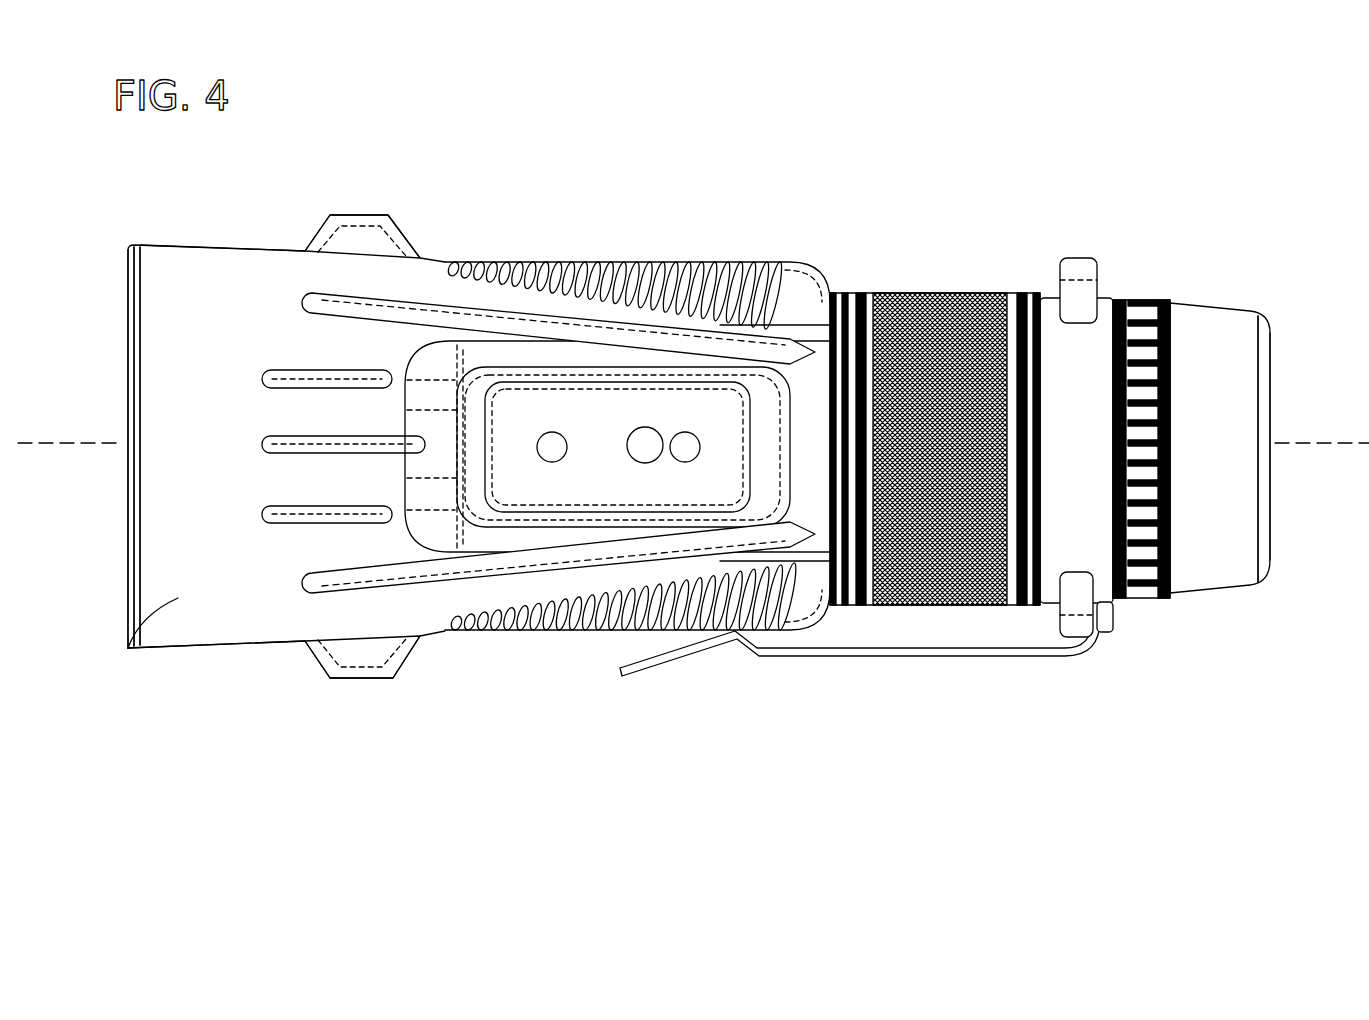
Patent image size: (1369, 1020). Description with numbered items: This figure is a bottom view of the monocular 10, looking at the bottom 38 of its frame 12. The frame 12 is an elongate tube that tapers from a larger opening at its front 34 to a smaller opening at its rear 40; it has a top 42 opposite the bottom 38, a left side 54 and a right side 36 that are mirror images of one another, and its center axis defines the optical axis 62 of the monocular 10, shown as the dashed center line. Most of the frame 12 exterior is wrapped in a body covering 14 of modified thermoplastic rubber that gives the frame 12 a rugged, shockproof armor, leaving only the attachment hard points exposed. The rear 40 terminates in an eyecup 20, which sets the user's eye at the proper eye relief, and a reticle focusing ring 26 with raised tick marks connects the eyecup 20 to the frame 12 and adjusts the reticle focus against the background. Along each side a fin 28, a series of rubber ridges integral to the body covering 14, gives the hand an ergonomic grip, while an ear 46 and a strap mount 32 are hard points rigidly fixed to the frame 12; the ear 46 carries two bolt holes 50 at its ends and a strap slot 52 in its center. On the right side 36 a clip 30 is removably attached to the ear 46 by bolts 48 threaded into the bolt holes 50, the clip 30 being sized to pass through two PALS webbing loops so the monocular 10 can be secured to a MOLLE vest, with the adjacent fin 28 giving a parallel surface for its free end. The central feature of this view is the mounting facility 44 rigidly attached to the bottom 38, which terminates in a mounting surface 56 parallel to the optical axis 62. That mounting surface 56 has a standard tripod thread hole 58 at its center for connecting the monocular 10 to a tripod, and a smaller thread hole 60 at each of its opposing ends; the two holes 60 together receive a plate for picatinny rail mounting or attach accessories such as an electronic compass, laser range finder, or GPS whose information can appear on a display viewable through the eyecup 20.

The monocular 10 is at (229, 750).
The frame 12 is at (232, 245).
The body covering 14 is at (130, 648).
The eyecup 20 is at (1240, 306).
The reticle focusing ring 26 is at (897, 293).
The fin 28 is at (740, 340).
The clip 30 is at (936, 657).
The strap mount 32 is at (376, 243).
The front 34 is at (127, 308).
The right side 36 is at (185, 648).
The bottom 38 is at (292, 432).
The rear 40 is at (1273, 542).
The top 42 is at (213, 445).
The mounting facility 44 is at (517, 415).
The ear 46 is at (1080, 290).
The bolts 48 is at (1113, 622).
The bolt holes 50 is at (1060, 268).
The strap slot 52 is at (1055, 292).
The left side 54 is at (200, 245).
The mounting surface 56 is at (598, 430).
The tripod mount thread hole 58 is at (645, 428).
The thread holes 60 is at (677, 453).
The optical axis 62 is at (65, 440).